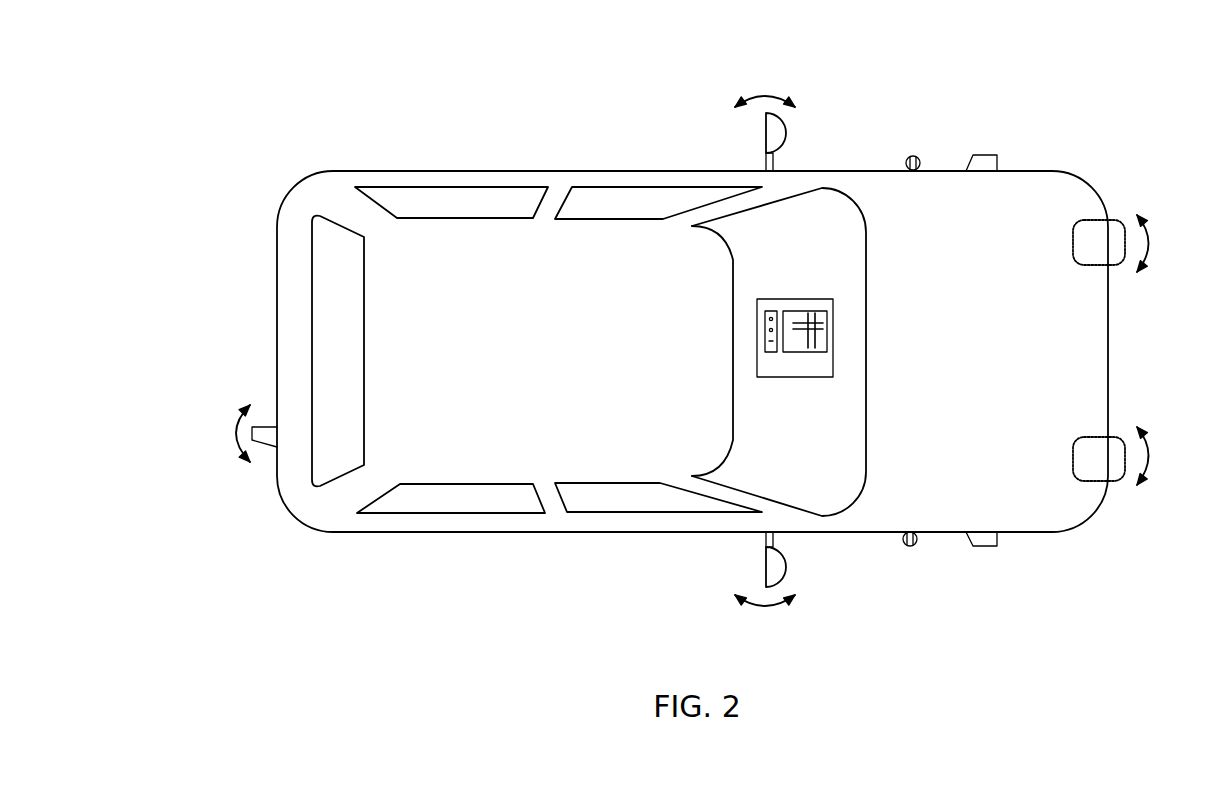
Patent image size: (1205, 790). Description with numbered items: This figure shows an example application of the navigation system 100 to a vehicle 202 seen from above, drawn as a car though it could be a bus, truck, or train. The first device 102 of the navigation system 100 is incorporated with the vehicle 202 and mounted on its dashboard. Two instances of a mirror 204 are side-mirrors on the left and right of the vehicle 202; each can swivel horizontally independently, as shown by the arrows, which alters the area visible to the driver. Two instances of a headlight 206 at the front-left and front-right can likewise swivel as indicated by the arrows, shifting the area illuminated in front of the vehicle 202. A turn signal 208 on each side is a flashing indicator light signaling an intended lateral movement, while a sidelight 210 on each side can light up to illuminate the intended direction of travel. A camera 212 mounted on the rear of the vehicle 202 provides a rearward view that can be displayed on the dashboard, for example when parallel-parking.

The navigation system 100 is at (210, 72).
The first device 102 is at (758, 366).
The vehicle 202 is at (340, 187).
The mirror 204 is at (775, 132).
The headlight 206 is at (1098, 232).
The turn signal 208 is at (910, 158).
The sidelight 210 is at (985, 162).
The camera 212 is at (265, 426).